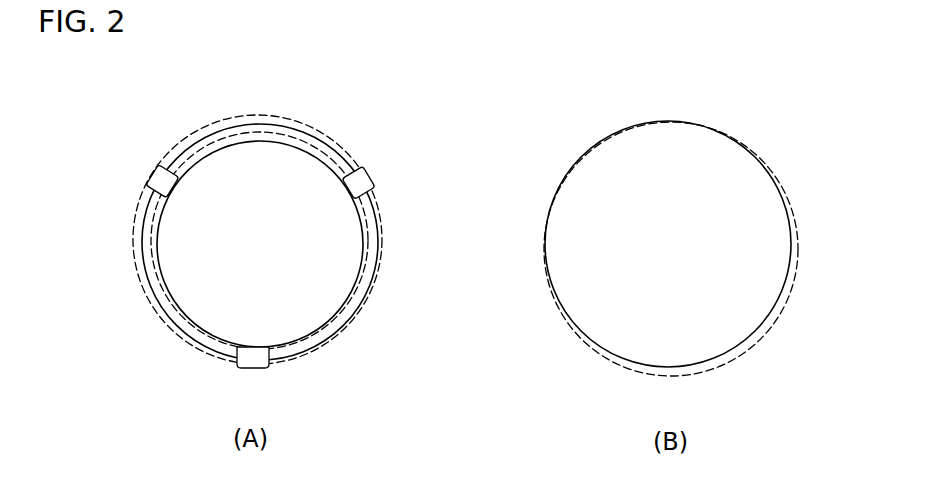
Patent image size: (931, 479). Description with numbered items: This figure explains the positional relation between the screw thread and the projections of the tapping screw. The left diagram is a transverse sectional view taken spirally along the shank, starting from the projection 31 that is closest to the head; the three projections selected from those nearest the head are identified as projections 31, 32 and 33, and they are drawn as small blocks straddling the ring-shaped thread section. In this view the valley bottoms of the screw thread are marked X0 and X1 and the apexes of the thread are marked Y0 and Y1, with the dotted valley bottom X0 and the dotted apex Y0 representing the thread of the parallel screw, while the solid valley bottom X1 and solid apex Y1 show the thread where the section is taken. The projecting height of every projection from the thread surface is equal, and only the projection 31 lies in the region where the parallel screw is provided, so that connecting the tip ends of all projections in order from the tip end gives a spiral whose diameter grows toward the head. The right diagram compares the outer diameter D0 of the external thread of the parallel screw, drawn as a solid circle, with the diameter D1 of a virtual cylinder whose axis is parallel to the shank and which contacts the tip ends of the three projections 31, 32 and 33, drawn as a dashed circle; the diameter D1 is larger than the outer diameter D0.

The projection 31 is at (260, 358).
The projection 32 is at (373, 173).
The projection 33 is at (156, 170).
The apex of the screw thread Y0 is at (296, 123).
The apex of the screw thread Y1 is at (222, 128).
The valley bottom of the screw thread X0 is at (172, 310).
The valley bottom of the screw thread X1 is at (192, 316).
The outer diameter of the external thread D0 is at (662, 120).
The diameter of the virtual cylinder D1 is at (757, 348).